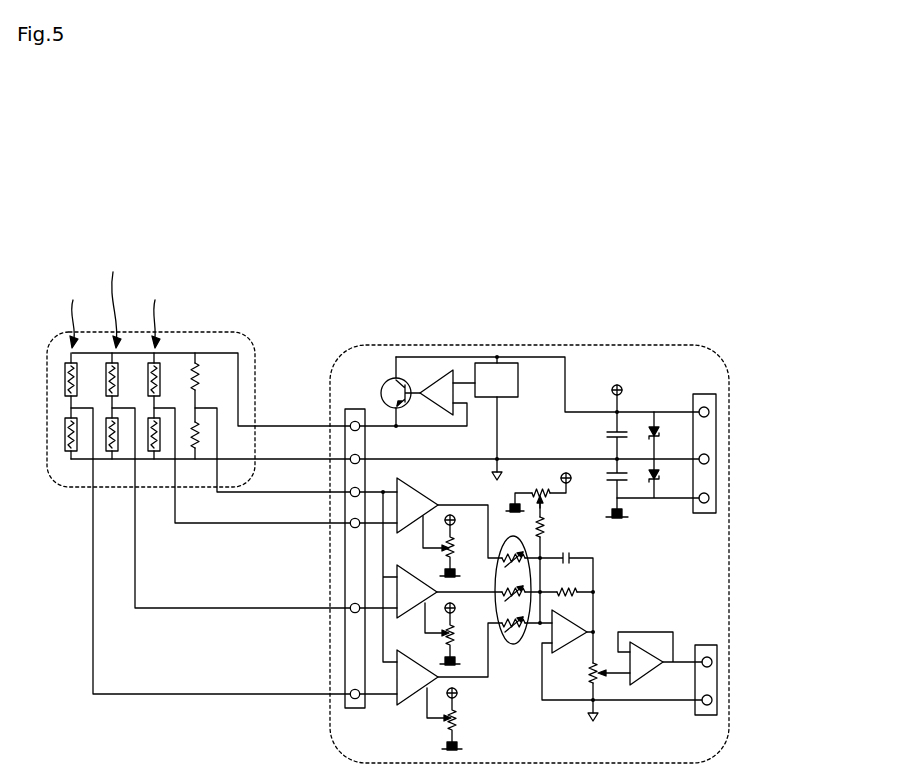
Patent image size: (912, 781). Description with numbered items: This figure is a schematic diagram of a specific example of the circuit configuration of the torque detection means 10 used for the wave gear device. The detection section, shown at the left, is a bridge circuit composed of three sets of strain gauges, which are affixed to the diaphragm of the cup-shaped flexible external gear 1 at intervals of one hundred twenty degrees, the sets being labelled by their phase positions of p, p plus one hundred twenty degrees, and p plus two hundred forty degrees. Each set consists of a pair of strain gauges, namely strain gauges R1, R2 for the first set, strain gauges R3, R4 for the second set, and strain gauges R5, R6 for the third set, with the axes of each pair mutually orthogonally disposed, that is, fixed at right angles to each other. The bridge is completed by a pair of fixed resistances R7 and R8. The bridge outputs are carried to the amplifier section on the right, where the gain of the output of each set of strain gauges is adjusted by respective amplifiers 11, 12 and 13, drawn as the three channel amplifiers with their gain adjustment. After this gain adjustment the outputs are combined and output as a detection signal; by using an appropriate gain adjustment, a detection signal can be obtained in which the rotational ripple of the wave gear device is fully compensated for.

The cup-shaped flexible external gear 1 is at (425, 498).
The torque detection means 10 is at (320, 310).
The amplifier 11 is at (524, 344).
The amplifier 12 is at (449, 615).
The amplifier 13 is at (449, 686).
The strain gauge R1 is at (64, 383).
The strain gauge R2 is at (64, 438).
The strain gauge R3 is at (106, 394).
The strain gauge R4 is at (106, 444).
The strain gauge R5 is at (147, 394).
The strain gauge R6 is at (148, 444).
The fixed resistance R7 is at (192, 381).
The fixed resistance R8 is at (192, 444).